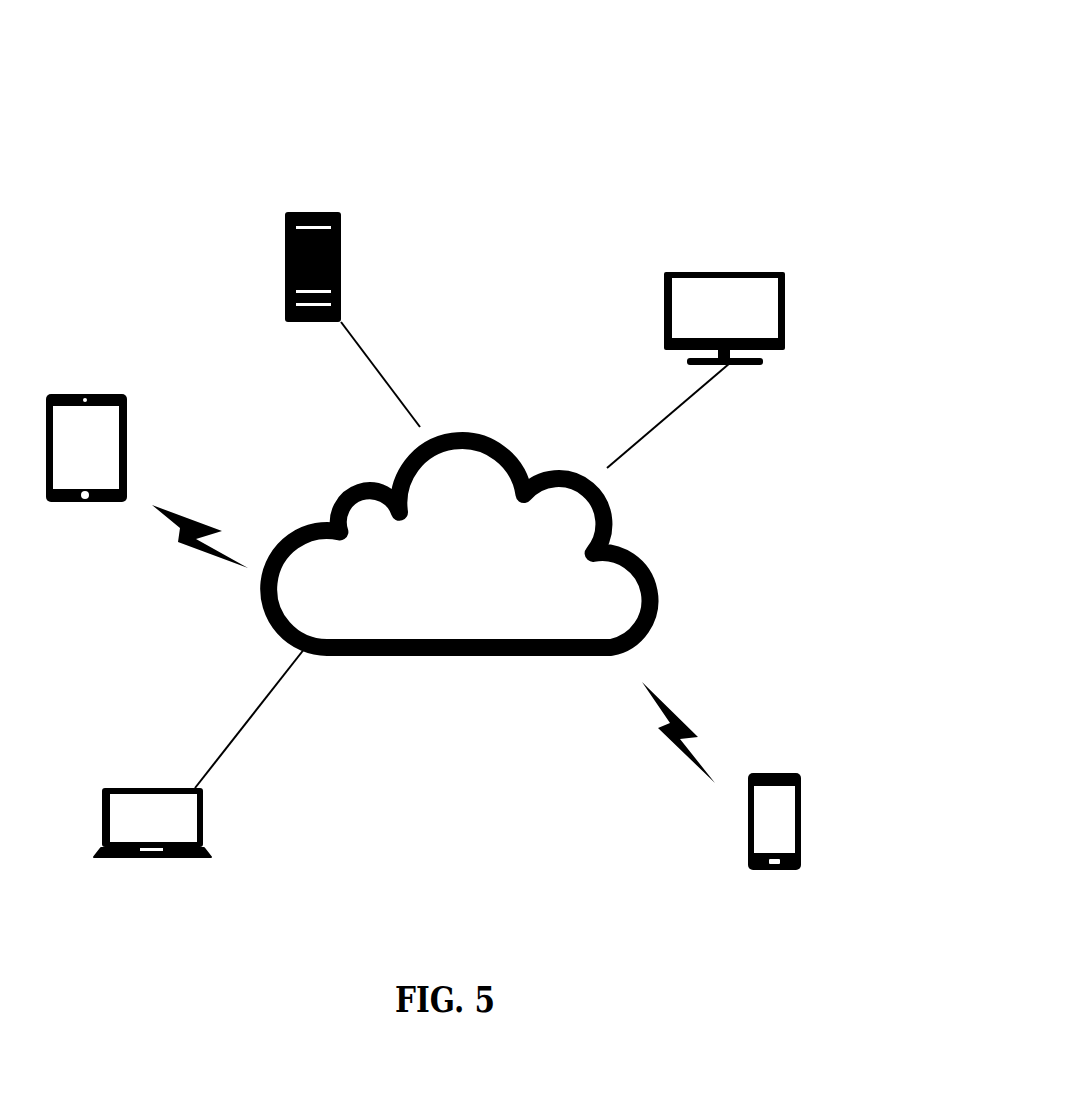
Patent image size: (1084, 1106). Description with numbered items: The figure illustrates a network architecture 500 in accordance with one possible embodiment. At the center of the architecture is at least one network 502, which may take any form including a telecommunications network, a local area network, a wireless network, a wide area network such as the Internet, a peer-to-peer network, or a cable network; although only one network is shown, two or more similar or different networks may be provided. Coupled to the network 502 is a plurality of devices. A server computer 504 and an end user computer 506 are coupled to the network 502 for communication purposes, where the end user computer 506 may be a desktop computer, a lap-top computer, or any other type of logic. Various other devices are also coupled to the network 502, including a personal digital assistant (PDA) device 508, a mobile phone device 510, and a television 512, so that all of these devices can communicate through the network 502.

The network architecture 500 is at (90, 86).
The network 502 is at (470, 655).
The server computer 504 is at (313, 212).
The end user computer 506 is at (148, 788).
The personal digital assistant (PDA) device 508 is at (88, 394).
The mobile phone device 510 is at (765, 773).
The television 512 is at (728, 272).